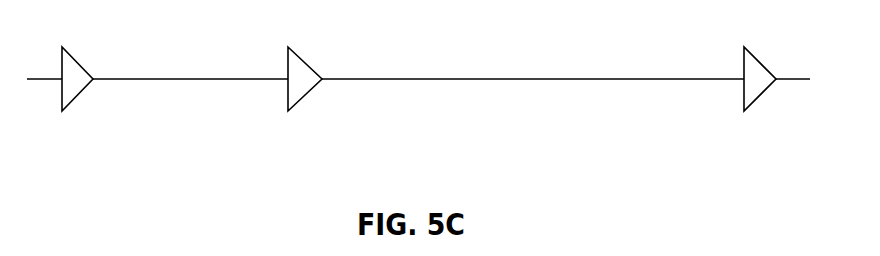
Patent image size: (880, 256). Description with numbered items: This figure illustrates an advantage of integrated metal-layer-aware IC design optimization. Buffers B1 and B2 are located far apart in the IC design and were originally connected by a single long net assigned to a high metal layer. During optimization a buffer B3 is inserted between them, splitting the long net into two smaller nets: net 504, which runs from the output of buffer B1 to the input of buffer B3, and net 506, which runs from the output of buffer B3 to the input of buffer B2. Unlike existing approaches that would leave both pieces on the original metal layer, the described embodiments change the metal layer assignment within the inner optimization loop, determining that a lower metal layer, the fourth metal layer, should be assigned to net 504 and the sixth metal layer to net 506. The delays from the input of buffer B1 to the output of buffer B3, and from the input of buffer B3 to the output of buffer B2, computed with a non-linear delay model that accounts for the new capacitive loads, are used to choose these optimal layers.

The net 504 is at (158, 79).
The net 506 is at (418, 79).
The buffer B1 is at (60, 65).
The buffer B2 is at (774, 65).
The buffer B3 is at (299, 65).